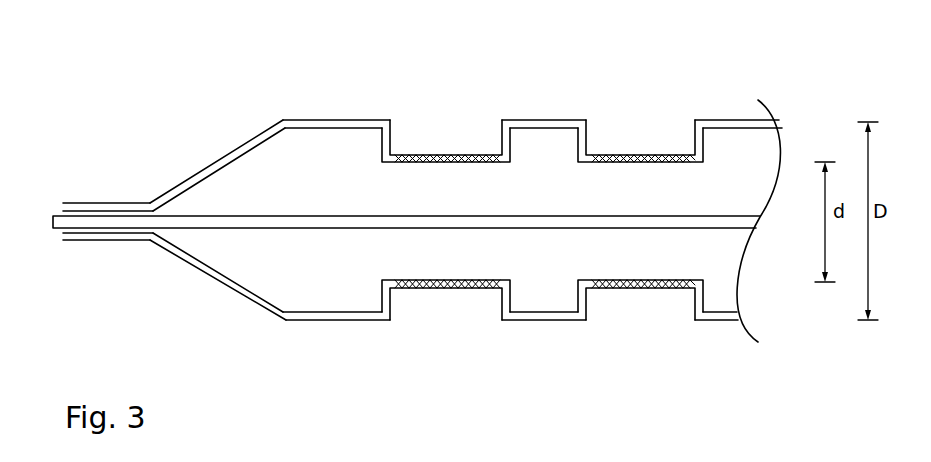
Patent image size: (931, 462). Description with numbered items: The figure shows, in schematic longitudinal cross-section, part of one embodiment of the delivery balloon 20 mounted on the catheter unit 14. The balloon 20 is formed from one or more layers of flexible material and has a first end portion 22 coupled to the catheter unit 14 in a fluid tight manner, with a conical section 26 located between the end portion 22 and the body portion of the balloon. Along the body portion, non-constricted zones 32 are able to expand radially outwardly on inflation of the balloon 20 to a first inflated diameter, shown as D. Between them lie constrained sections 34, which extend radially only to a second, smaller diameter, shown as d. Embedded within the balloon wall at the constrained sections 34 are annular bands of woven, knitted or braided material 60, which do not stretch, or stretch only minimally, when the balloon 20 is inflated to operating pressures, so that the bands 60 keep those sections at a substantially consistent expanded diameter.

The delivery balloon 20 is at (404, 193).
The catheter unit 14 is at (51, 227).
The first end portion 22 is at (100, 238).
The conical section 26 is at (203, 266).
The non-constricted zones 32 is at (337, 118).
The constrained sections 34 is at (409, 278).
The bands of woven, knitted or braided material 60 is at (450, 289).